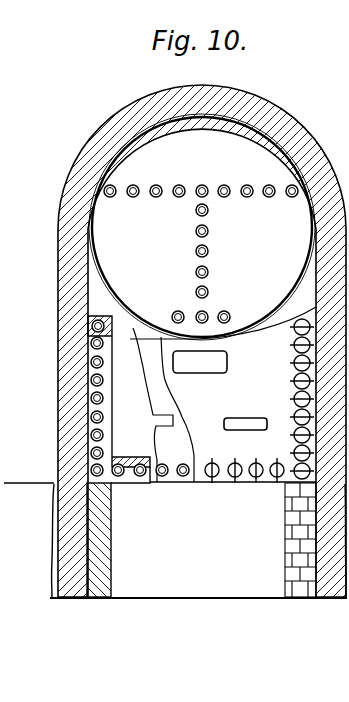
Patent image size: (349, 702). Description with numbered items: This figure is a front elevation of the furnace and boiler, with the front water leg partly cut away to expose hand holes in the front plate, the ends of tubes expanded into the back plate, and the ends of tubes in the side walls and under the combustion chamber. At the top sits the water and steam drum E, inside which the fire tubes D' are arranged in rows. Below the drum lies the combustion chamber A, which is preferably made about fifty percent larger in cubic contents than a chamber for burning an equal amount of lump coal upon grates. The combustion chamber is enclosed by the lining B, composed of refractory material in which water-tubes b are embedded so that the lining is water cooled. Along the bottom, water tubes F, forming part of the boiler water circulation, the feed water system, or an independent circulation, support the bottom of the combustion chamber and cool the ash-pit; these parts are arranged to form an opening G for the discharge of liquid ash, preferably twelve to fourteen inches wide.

The water and steam drum E is at (202, 227).
The fire tubes D' is at (201, 254).
The water-tubes b is at (96, 358).
The combustion chamber A is at (193, 405).
The lining of the combustion chamber B is at (111, 438).
The water tubes F is at (141, 477).
The opening for the discharge of liquid ash G is at (196, 482).